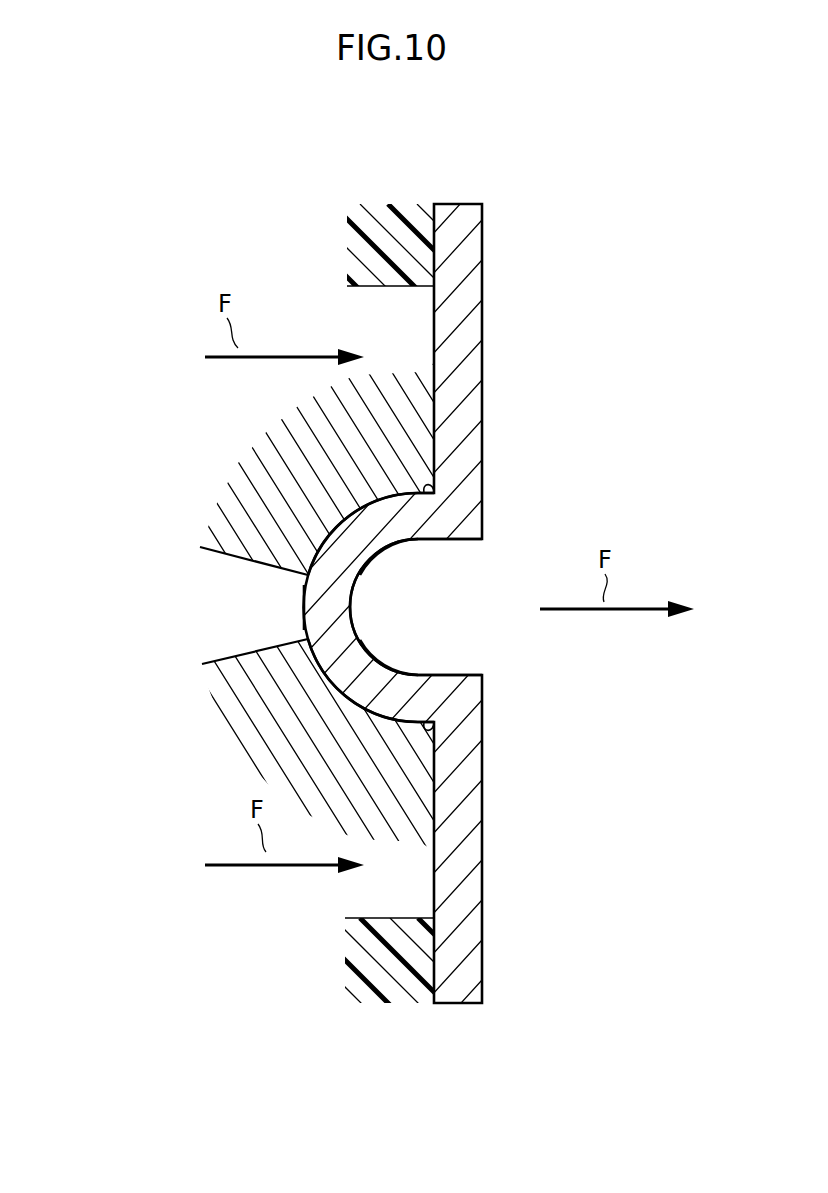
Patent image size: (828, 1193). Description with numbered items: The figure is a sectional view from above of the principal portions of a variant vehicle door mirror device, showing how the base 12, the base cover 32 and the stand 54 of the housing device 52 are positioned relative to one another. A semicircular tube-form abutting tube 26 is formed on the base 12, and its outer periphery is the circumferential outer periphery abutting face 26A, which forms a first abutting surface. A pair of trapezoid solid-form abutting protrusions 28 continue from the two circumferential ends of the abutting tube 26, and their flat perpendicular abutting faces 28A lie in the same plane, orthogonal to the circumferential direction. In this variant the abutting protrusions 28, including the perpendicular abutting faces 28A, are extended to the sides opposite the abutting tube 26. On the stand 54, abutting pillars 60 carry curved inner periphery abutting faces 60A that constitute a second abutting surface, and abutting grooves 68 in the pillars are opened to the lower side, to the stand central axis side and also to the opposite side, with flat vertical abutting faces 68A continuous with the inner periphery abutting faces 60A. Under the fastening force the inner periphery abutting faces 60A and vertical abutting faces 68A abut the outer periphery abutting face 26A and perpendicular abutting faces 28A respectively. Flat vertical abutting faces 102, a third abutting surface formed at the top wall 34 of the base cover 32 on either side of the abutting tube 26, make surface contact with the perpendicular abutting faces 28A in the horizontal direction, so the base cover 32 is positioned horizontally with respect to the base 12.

The base 12 is at (428, 601).
The abutting protrusion 28 is at (426, 601).
The abutting groove 68 is at (436, 400).
The vertical abutting face 68A is at (440, 466).
The perpendicular abutting face 28A is at (437, 494).
The abutting tube 26 is at (354, 612).
The outer periphery abutting face 26A is at (306, 607).
The abutting pillar 60 is at (300, 574).
The inner periphery abutting face 60A is at (372, 510).
The stand 54 is at (324, 610).
The housing device 52 is at (324, 610).
The top wall 34 is at (360, 289).
The base cover 32 is at (365, 606).
The vertical abutting face 102 is at (432, 262).